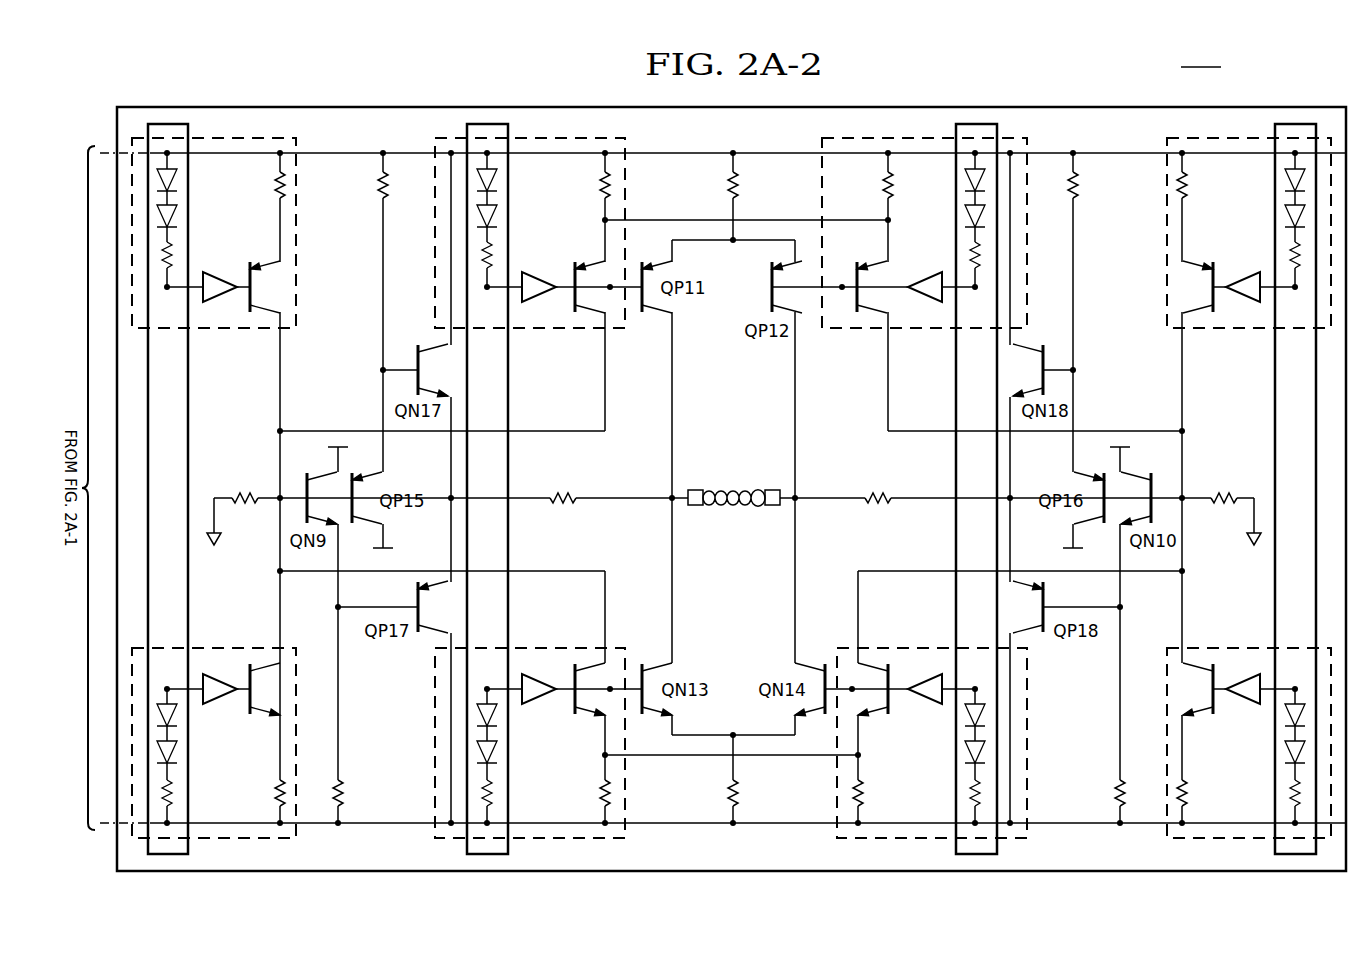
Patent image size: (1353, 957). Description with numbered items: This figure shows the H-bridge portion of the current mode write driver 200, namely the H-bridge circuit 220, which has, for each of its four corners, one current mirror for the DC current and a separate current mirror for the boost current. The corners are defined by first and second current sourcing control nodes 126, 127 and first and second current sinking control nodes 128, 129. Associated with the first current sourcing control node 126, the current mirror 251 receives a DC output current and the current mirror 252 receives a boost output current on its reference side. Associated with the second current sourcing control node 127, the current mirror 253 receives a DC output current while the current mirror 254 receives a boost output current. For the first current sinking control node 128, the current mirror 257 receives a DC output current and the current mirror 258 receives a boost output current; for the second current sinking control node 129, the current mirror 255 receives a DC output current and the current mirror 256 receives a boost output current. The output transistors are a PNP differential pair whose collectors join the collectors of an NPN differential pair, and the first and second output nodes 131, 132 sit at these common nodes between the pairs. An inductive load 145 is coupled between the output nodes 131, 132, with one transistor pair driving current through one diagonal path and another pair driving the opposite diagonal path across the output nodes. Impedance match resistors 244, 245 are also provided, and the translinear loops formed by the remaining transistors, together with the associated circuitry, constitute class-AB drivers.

The circuit (continued) 200 is at (1245, 56).
The H-bridge circuit 220 is at (920, 107).
The current mirror 251 is at (240, 329).
The current mirror 252 is at (558, 329).
The current mirror 253 is at (1248, 329).
The current mirror 254 is at (921, 329).
The current mirror 255 is at (1247, 647).
The current mirror 256 is at (917, 647).
The current mirror 257 is at (241, 647).
The current mirror 258 is at (565, 647).
The first current sourcing control node 126 is at (613, 293).
The second current sourcing control node 127 is at (843, 293).
The first current sinking control node 128 is at (612, 683).
The second current sinking control node 129 is at (851, 683).
The first output node 131 is at (668, 495).
The second output node 132 is at (800, 495).
The load 145 is at (732, 483).
The impedance match resistor 244 is at (564, 508).
The impedance match resistor 245 is at (878, 508).